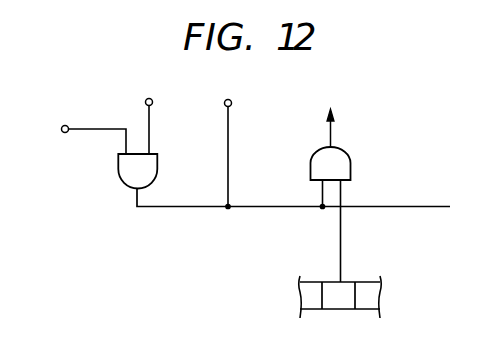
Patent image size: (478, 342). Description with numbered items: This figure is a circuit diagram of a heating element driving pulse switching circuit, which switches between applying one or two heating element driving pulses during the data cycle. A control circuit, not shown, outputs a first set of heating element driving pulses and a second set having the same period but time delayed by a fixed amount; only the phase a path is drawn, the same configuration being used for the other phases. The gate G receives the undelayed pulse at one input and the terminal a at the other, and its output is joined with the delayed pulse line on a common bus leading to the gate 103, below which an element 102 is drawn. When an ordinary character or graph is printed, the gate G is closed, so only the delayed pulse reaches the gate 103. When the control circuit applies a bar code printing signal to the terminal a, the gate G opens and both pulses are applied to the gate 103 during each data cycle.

The gate 103 is at (351, 165).
The register 102 is at (366, 282).
The gate G is at (118, 165).
The terminal a is at (86, 135).